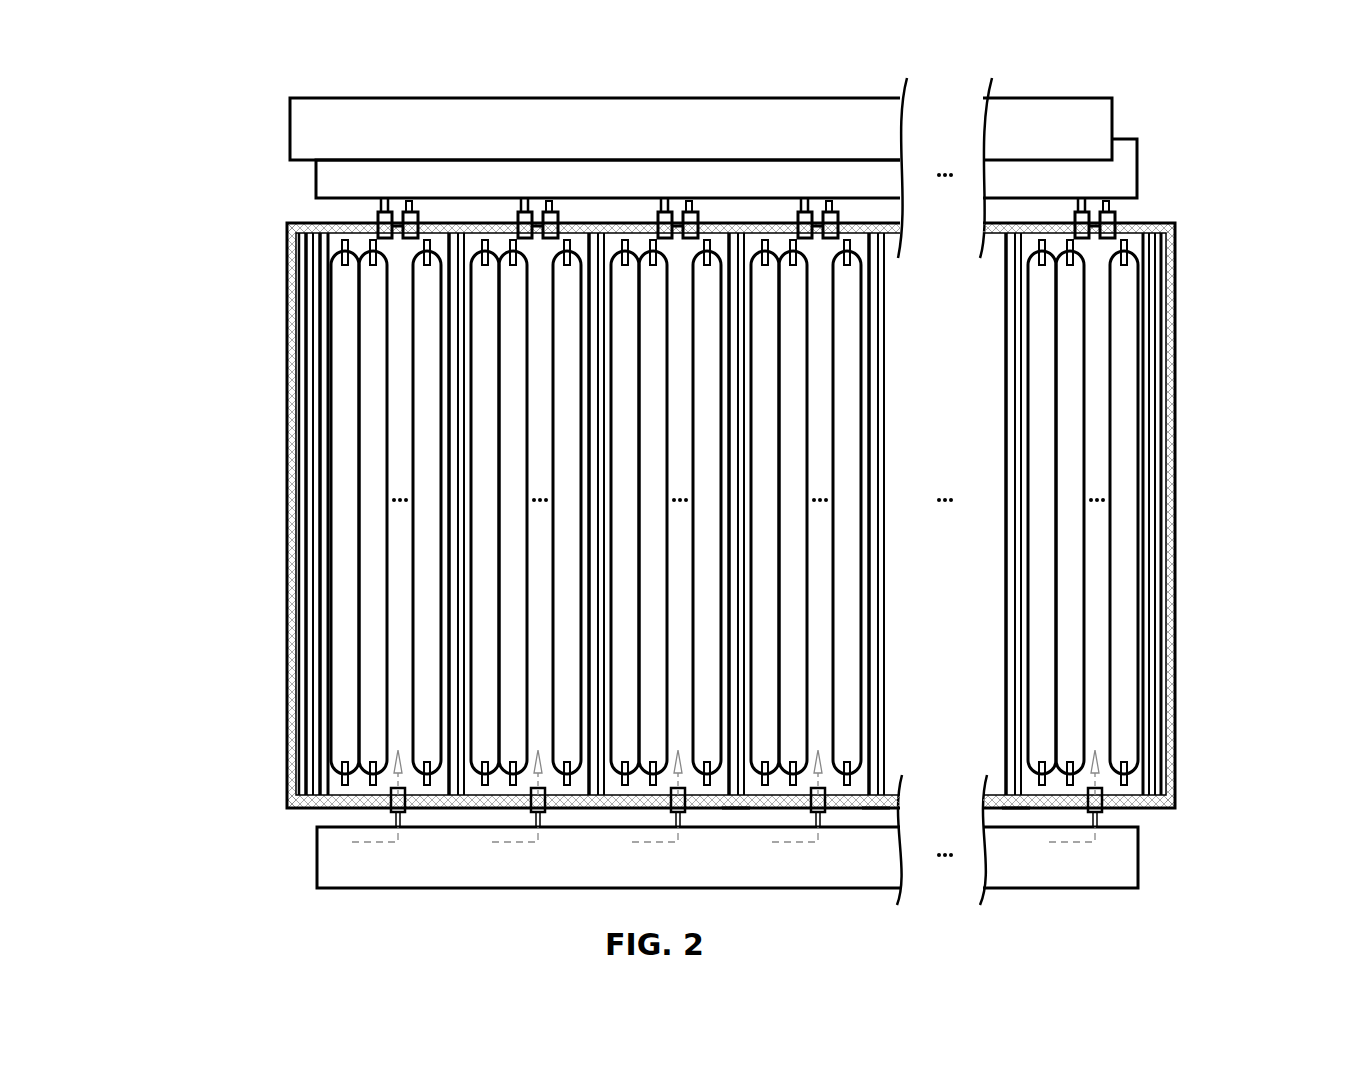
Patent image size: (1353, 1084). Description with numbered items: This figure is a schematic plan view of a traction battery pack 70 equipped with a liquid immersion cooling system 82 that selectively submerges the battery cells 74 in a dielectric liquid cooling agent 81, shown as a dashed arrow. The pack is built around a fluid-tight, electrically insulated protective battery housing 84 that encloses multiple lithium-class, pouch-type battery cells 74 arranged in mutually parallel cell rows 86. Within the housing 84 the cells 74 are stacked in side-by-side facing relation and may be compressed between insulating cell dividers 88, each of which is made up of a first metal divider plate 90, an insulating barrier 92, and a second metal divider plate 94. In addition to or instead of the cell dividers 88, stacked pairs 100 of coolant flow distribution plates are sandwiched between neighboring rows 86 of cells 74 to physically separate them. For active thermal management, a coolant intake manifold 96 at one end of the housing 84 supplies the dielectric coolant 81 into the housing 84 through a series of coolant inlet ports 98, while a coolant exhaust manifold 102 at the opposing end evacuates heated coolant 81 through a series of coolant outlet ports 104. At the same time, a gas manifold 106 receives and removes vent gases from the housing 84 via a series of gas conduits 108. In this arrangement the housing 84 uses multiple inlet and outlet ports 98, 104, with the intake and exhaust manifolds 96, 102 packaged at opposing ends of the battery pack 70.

The traction battery pack 70 is at (160, 205).
The battery cells 74 is at (343, 429).
The dielectric liquid cooling agent 81 is at (370, 843).
The liquid immersion cooling system 82 is at (1222, 142).
The battery housing 84 is at (287, 375).
The cell rows 86 is at (734, 417).
The cell dividers 88 is at (307, 592).
The first metal divider plate 90 is at (300, 636).
The insulating barrier 92 is at (307, 676).
The second metal divider plate 94 is at (327, 756).
The coolant intake manifold 96 is at (317, 843).
The coolant inlet ports 98 is at (406, 814).
The stacked pairs of coolant flow distribution plates 100 is at (736, 815).
The coolant exhaust manifold 102 is at (316, 174).
The coolant outlet ports 104 is at (411, 213).
The gas manifold 106 is at (290, 101).
The gas conduits 108 is at (380, 213).